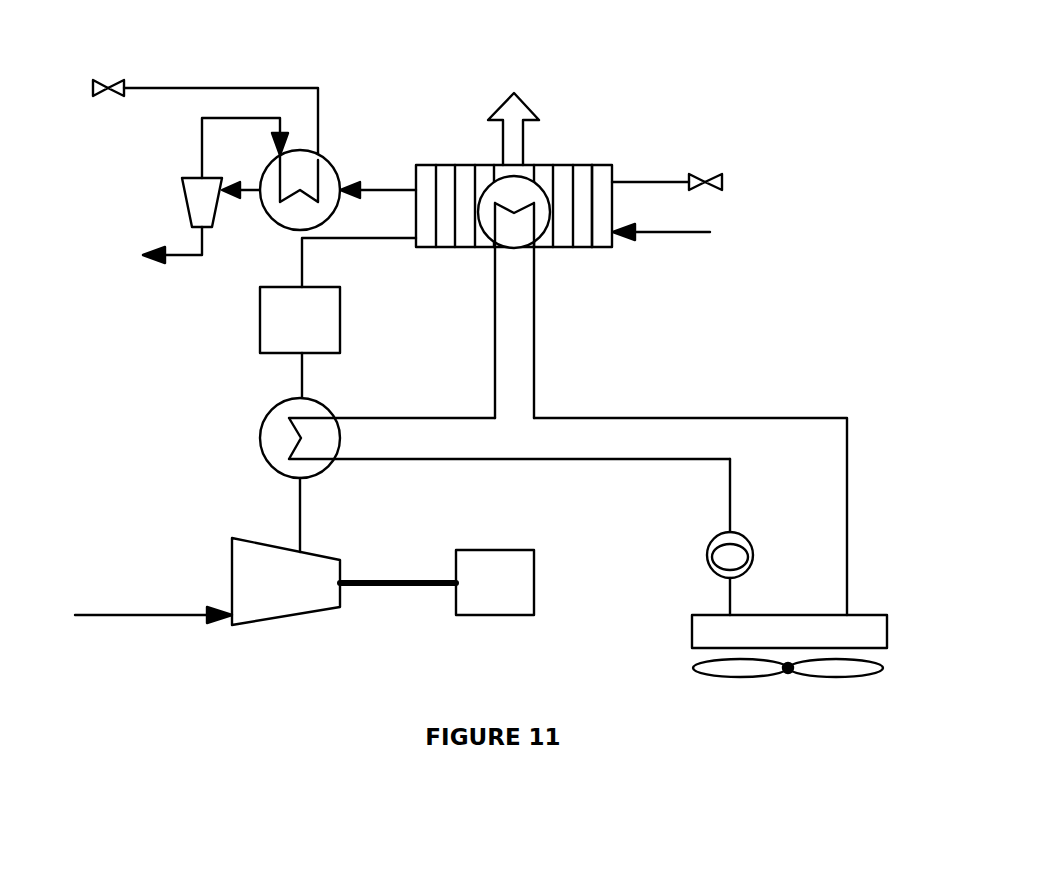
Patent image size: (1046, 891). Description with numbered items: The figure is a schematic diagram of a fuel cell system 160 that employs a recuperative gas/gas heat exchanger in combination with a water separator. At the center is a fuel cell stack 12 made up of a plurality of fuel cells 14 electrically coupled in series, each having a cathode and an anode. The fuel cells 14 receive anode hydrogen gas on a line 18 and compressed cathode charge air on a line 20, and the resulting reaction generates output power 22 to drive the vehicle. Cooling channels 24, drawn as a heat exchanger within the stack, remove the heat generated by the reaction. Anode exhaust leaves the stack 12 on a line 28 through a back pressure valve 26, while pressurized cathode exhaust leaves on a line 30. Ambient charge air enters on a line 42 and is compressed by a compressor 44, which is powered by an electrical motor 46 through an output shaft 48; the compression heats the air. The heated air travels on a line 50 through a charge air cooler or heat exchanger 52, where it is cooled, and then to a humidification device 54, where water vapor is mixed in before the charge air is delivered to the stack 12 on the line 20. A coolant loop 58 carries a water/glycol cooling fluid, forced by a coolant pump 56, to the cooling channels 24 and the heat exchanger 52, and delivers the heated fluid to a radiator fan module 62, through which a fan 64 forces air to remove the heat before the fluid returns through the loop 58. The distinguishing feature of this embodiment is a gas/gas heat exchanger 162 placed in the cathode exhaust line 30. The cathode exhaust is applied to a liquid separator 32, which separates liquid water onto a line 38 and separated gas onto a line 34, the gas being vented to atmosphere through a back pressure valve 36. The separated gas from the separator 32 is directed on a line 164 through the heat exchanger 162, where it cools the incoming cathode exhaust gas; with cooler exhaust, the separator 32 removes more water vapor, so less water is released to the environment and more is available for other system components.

The fuel cell stack 12 is at (452, 165).
The fuel cells 14 is at (602, 176).
The line 18 is at (690, 235).
The line 20 is at (378, 240).
The output power 22 is at (503, 100).
The cooling channels 24 is at (547, 243).
The back pressure valve 26 is at (722, 182).
The line 28 is at (650, 182).
The line 30 is at (392, 188).
The liquid separator 32 is at (185, 200).
The line 34 is at (215, 88).
The back pressure valve 36 is at (108, 82).
The line 38 is at (183, 258).
The line 42 is at (108, 617).
The compressor 44 is at (232, 583).
The electrical motor 46 is at (505, 550).
The output shaft 48 is at (393, 580).
The line 50 is at (298, 517).
The heat exchanger 52 is at (262, 437).
The humidification device 54 is at (260, 318).
The coolant pump 56 is at (755, 555).
The coolant loop 58 is at (615, 418).
The radiator fan module 62 is at (887, 635).
The fan 64 is at (812, 675).
The fuel cell system 160 is at (770, 318).
The gas/gas heat exchanger 162 is at (283, 228).
The line 164 is at (200, 145).